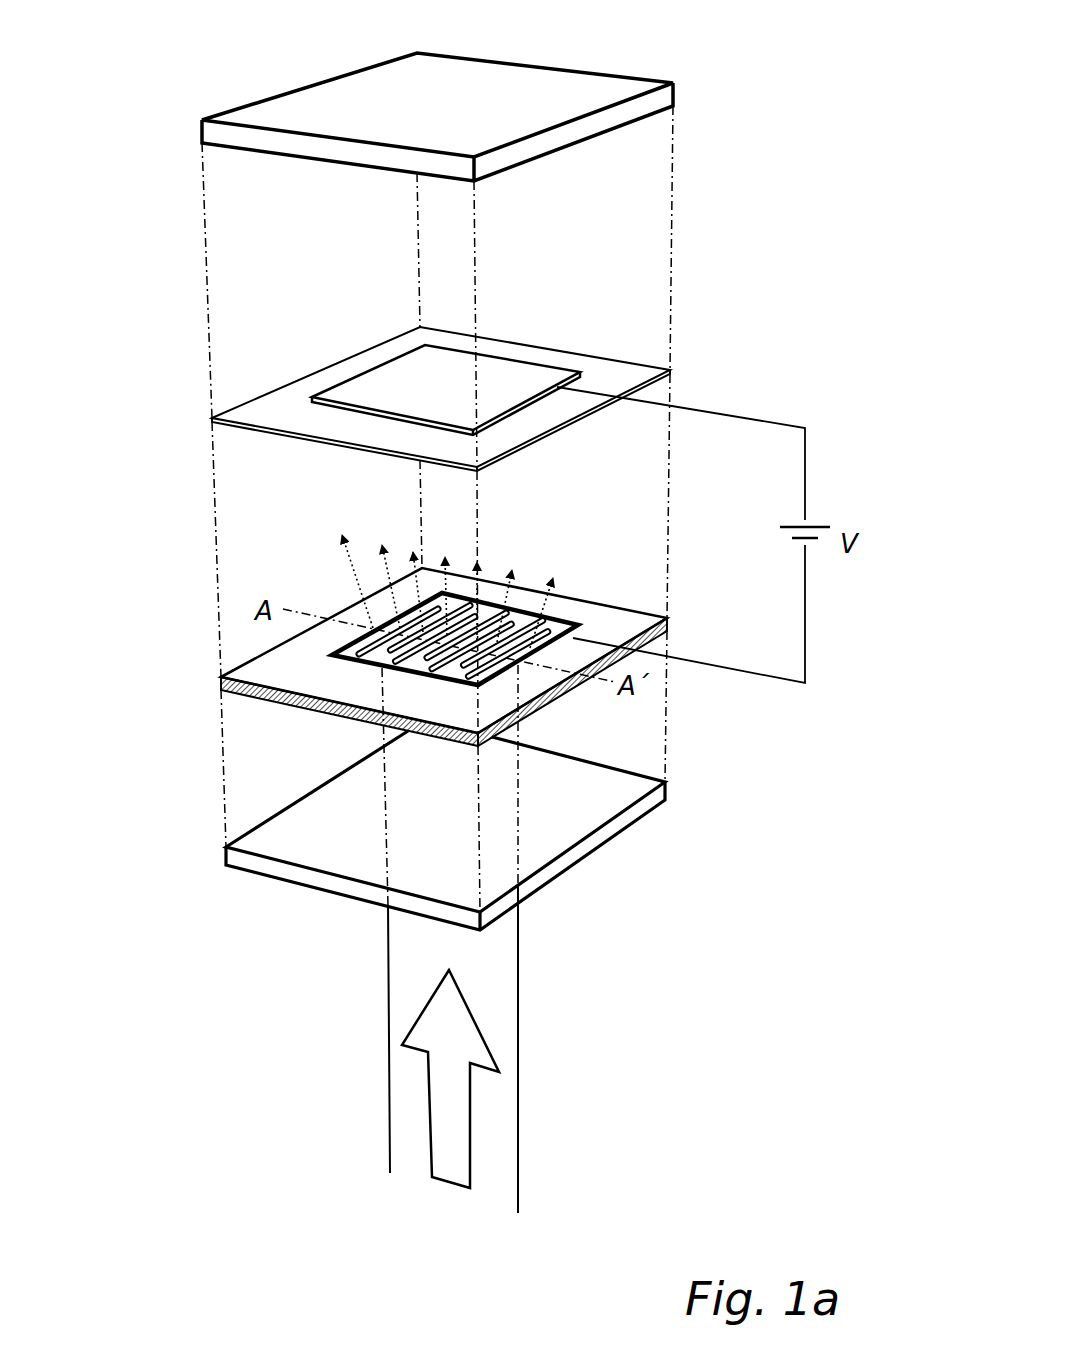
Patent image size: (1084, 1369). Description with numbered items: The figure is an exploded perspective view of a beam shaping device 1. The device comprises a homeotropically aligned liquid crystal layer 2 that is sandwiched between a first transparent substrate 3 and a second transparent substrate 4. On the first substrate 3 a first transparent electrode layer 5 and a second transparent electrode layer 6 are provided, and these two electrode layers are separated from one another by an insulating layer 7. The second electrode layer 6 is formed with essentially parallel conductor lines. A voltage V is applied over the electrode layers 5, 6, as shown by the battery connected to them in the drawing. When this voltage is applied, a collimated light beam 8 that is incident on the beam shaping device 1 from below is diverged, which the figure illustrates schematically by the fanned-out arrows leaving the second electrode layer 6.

The beam shaping device 1 is at (783, 57).
The liquid crystal layer 2 is at (220, 682).
The first transparent substrate 3 is at (202, 132).
The second transparent substrate 4 is at (226, 857).
The first transparent electrode layer 5 is at (375, 385).
The second transparent electrode layer 6 is at (338, 654).
The insulating layer 7 is at (253, 415).
The collimated light beam 8 is at (450, 944).